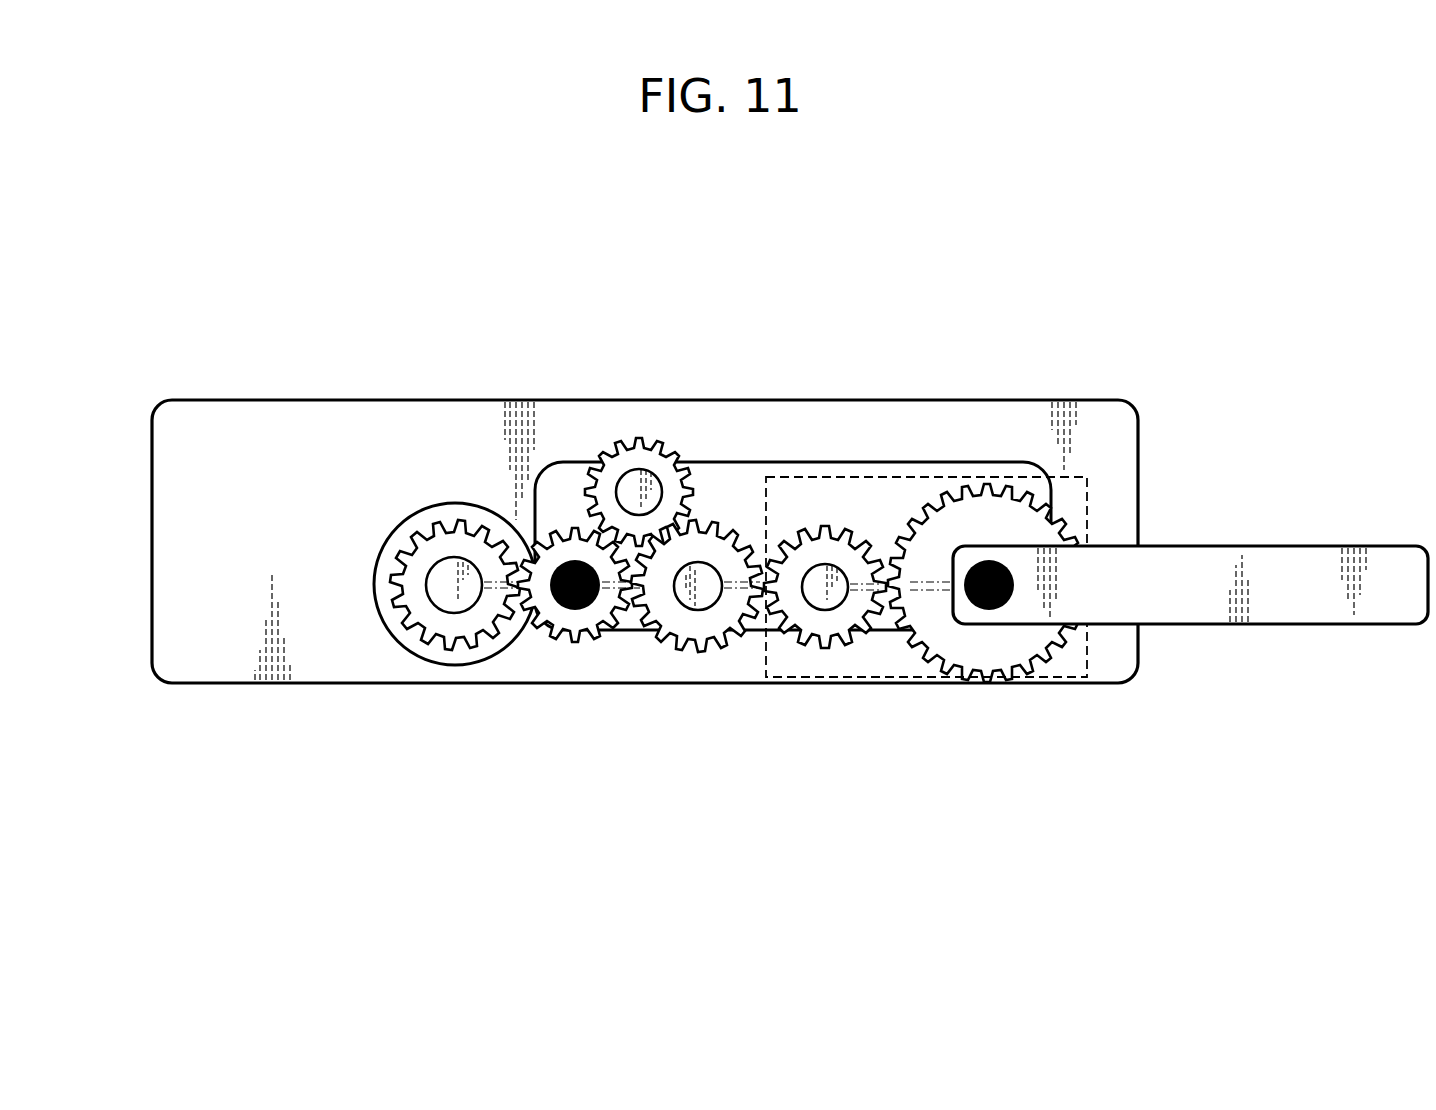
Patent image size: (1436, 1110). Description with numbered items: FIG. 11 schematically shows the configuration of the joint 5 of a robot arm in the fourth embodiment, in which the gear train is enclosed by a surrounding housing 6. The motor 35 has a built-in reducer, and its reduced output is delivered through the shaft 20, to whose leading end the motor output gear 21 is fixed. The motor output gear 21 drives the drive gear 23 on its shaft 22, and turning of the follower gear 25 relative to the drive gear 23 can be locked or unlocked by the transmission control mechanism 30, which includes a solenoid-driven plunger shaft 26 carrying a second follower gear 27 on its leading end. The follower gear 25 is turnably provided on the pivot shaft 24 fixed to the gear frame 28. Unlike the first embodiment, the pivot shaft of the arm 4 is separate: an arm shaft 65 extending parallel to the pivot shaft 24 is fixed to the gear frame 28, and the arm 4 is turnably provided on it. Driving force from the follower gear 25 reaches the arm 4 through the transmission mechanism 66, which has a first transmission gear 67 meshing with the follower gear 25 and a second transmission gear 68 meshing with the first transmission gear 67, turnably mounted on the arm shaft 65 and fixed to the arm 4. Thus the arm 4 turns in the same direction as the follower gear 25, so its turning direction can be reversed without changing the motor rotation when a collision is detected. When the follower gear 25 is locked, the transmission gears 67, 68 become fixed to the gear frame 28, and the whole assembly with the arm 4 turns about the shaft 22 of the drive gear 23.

The arm 4 is at (1312, 545).
The joint 5 is at (907, 388).
The housing 6 is at (392, 398).
The shaft 20 is at (456, 598).
The motor output gear 21 is at (477, 640).
The shaft 22 is at (575, 607).
The drive gear 23 is at (603, 643).
The pivot shaft 24 is at (703, 597).
The follower gear 25 is at (722, 640).
The shaft 26 is at (628, 490).
The follower gear 27 is at (654, 460).
The gear frame 28 is at (845, 462).
The transmission control mechanism 30 is at (707, 501).
The motor 35 is at (380, 536).
The arm shaft 65 is at (995, 600).
The transmission mechanism 66 is at (1087, 497).
The first transmission gear 67 is at (852, 640).
The second transmission gear 68 is at (920, 654).